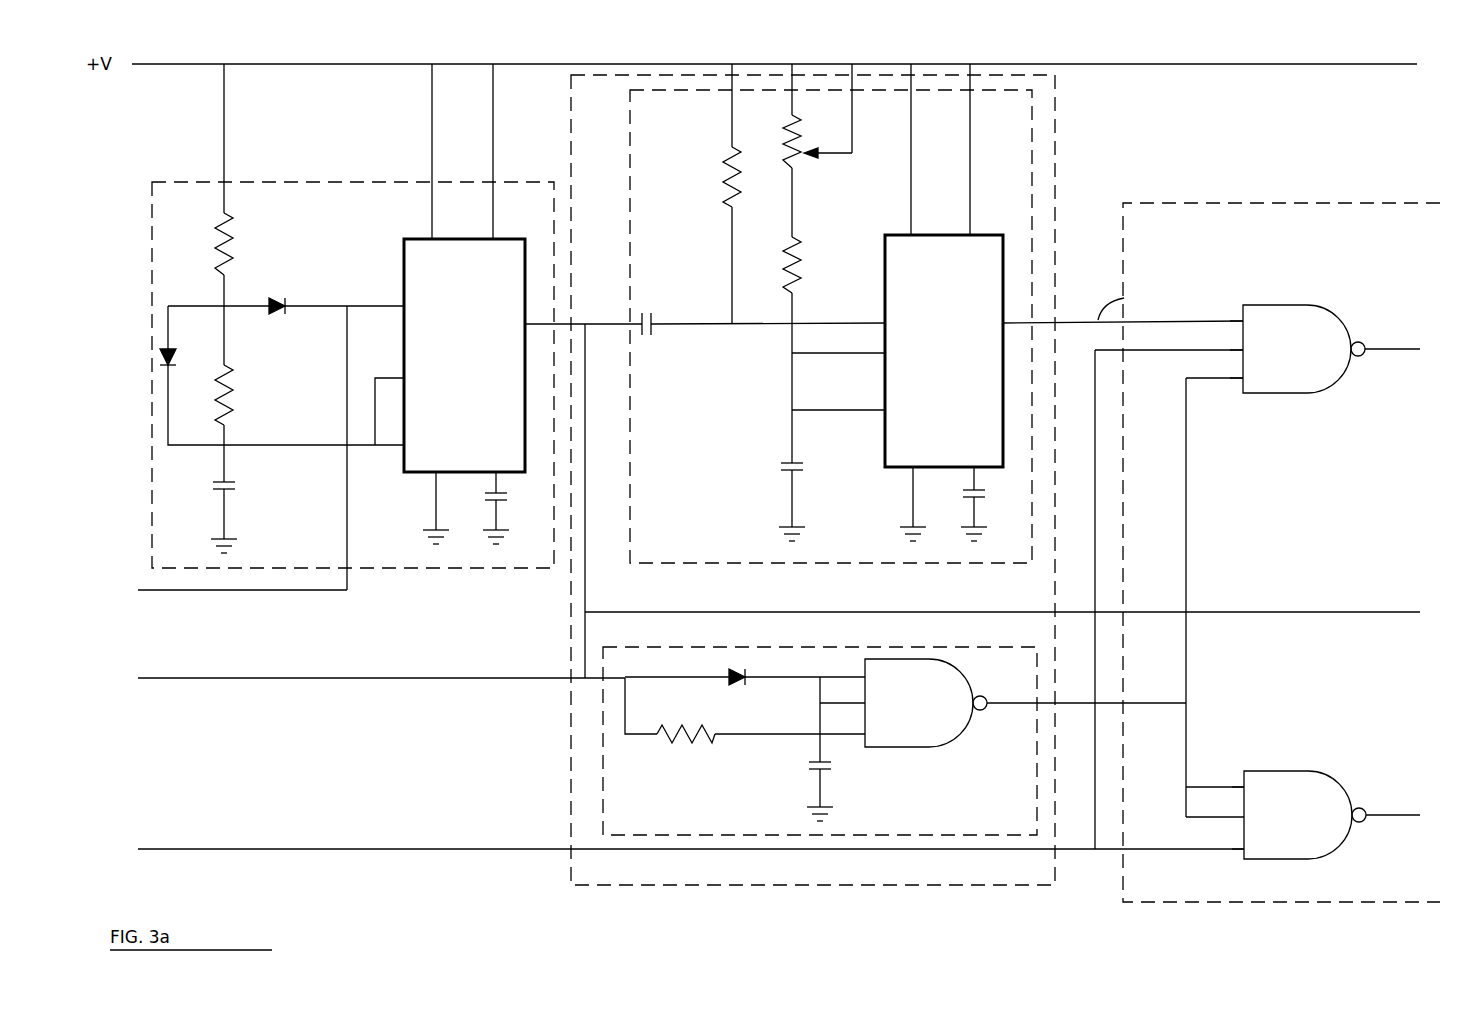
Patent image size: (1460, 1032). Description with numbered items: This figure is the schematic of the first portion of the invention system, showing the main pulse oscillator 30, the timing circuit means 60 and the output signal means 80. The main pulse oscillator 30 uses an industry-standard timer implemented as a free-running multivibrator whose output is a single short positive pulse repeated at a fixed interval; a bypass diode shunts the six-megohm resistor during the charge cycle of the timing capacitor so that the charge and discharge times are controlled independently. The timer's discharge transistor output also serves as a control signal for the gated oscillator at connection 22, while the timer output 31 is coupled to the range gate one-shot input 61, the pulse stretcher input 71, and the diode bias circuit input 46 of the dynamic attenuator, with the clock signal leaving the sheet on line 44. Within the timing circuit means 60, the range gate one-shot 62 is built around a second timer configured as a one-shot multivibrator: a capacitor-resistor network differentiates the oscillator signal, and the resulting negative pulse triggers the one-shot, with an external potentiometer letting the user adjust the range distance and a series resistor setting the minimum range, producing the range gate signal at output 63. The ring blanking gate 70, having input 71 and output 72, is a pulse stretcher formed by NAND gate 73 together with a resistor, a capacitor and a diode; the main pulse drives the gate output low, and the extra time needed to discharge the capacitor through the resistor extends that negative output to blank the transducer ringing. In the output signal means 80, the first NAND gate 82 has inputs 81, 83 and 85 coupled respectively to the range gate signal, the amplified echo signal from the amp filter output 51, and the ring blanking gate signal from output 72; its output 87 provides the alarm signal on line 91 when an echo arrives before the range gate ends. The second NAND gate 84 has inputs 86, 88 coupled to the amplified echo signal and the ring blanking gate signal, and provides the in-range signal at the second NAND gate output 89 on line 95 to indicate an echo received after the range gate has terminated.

The gated oscillator control signal connection 22 is at (242, 581).
The main pulse oscillator 30 is at (327, 229).
The main pulse oscillator output line 31 is at (558, 318).
The line to FIG. 3b 44 is at (150, 674).
The diode bias circuit input 46 is at (1413, 603).
The amp filter output 51 is at (150, 848).
The timing circuit means 60 is at (958, 875).
The range gate one-shot input 61 is at (629, 333).
The range gate one-shot 62 is at (677, 505).
The range gate output line 63 is at (1040, 310).
The ring blanking gate 70 is at (640, 828).
The pulse stretcher input 71 is at (581, 692).
The ring blanking gate output 72 is at (1042, 690).
The NAND gate Z7b 73 is at (914, 723).
The output signal means 80 is at (1330, 727).
The first input of first NAND gate 81 is at (1218, 316).
The first NAND gate 82 is at (1296, 362).
The second input of first NAND gate 83 is at (1218, 346).
The second NAND gate 84 is at (1298, 832).
The third input of first NAND gate 85 is at (1218, 375).
The first input of second NAND gate 86 is at (1232, 766).
The NAND gate Z7a output 87 is at (1359, 357).
The second input of second NAND gate 88 is at (1222, 829).
The second NAND gate output 89 is at (1361, 823).
The output line to FIG. 3c 91 is at (1413, 342).
The output line to FIG. 3c 95 is at (1417, 810).